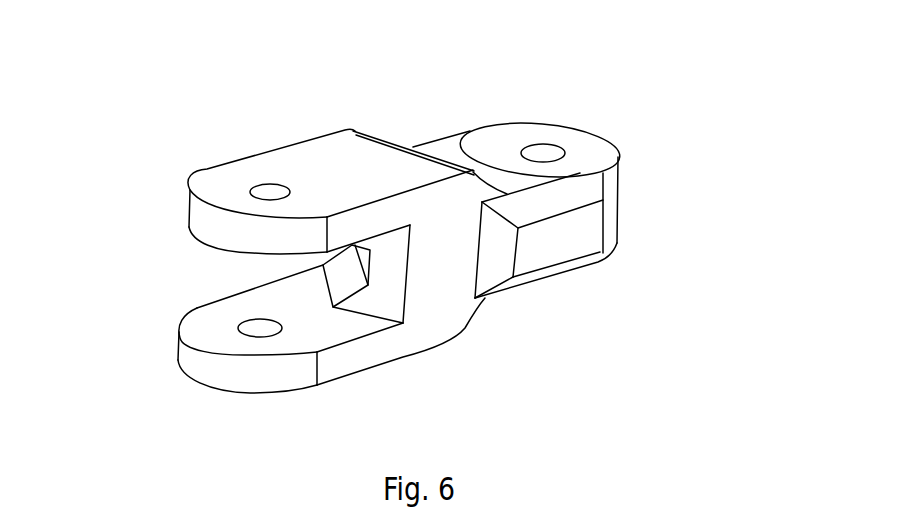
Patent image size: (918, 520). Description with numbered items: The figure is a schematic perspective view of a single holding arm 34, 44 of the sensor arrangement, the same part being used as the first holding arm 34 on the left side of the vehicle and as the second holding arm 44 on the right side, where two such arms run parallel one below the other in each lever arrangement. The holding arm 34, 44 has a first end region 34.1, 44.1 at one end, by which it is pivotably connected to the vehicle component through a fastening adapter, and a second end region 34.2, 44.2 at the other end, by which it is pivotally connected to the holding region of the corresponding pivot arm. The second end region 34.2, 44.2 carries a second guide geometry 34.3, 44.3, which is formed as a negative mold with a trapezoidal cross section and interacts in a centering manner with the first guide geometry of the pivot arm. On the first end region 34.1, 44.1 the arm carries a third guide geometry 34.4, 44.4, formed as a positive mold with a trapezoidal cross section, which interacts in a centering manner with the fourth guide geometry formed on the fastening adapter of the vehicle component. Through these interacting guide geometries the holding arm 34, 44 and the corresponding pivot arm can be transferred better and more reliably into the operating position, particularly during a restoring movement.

The holding arm 34 is at (437, 198).
The holding arm 44 is at (715, 137).
The first end region 34.1 is at (575, 120).
The first end region 44.1 is at (567, 130).
The second end region 34.2 is at (260, 186).
The second end region 44.2 is at (220, 183).
The second guide geometry 34.3 is at (253, 276).
The second guide geometry 44.3 is at (347, 266).
The third guide geometry 34.4 is at (588, 247).
The third guide geometry 44.4 is at (557, 237).